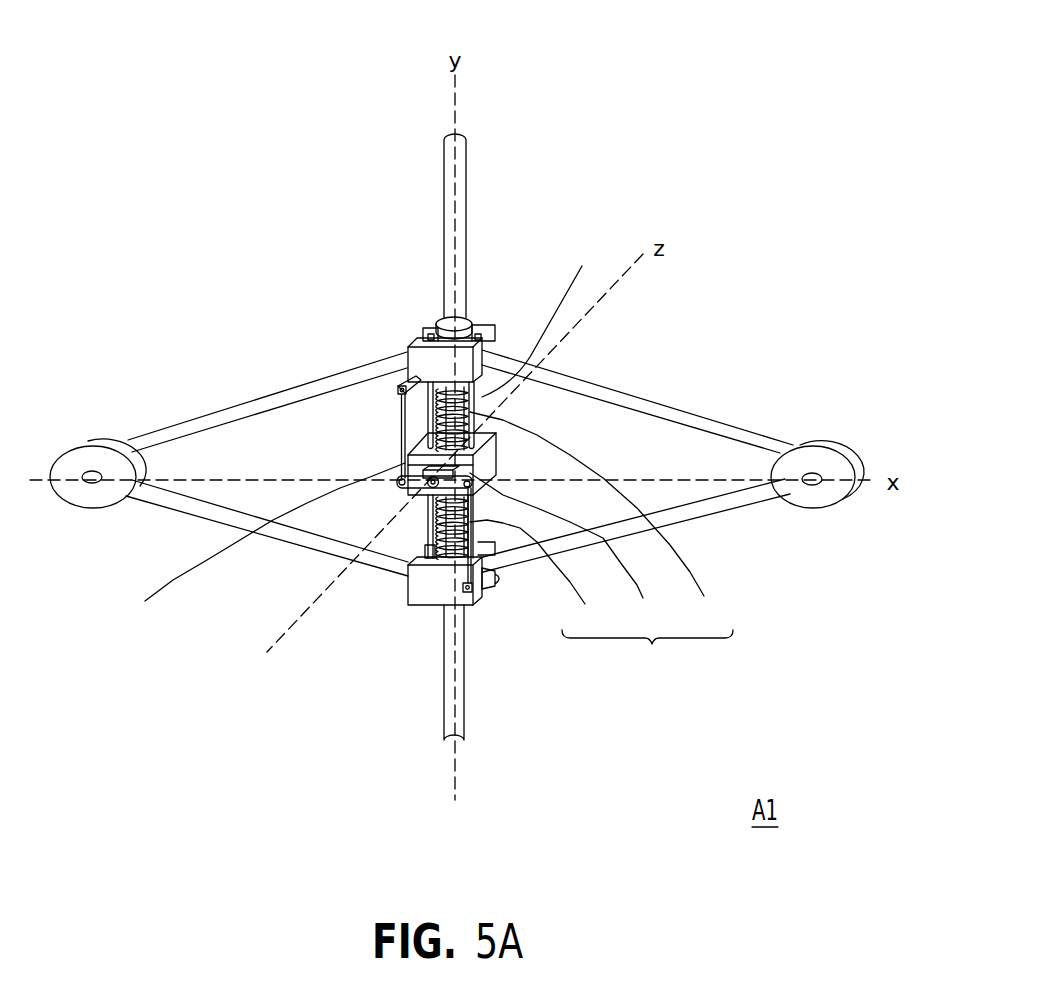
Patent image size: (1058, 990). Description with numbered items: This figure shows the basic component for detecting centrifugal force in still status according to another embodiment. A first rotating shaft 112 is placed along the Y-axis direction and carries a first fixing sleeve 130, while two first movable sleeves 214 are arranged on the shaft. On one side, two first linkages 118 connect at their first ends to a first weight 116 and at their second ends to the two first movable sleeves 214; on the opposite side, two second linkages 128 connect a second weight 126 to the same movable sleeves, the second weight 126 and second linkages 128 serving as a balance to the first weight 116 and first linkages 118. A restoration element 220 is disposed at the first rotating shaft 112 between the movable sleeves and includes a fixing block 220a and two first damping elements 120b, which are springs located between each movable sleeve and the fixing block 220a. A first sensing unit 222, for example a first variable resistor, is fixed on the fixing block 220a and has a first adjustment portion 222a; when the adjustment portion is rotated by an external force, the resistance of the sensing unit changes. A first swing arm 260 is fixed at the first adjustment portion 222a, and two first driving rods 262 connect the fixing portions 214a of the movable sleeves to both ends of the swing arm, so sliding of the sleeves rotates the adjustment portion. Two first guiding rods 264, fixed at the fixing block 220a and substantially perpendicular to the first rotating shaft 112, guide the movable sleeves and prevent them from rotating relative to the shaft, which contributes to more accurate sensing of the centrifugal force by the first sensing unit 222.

The first rotating shaft 112 is at (460, 248).
The first fixing sleeve 130 is at (440, 318).
The first movable sleeve 214 is at (478, 322).
The fixing portion 214a is at (323, 533).
The restoration element 220 is at (647, 655).
The fixing block 220a is at (554, 508).
The first damping element 120b is at (601, 519).
The first sensing unit 222 is at (337, 585).
The first adjustment portion 222a is at (390, 590).
The first swing arm 260 is at (352, 596).
The first driving rod 262 is at (508, 613).
The first guiding rod 264 is at (350, 426).
The second weight 126 is at (82, 458).
The first weight 116 is at (820, 462).
The second linkage 128 is at (325, 385).
The first linkage 118 is at (633, 398).